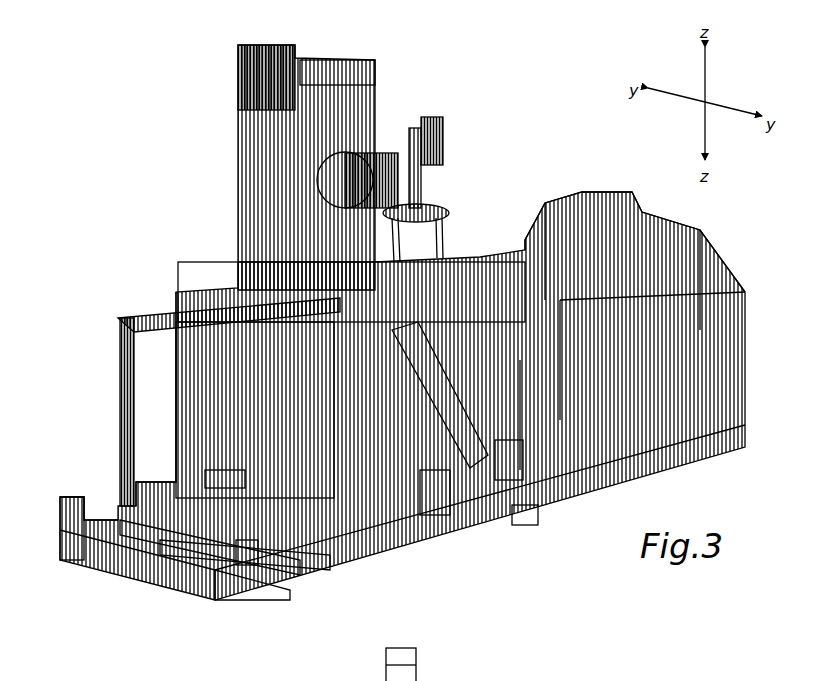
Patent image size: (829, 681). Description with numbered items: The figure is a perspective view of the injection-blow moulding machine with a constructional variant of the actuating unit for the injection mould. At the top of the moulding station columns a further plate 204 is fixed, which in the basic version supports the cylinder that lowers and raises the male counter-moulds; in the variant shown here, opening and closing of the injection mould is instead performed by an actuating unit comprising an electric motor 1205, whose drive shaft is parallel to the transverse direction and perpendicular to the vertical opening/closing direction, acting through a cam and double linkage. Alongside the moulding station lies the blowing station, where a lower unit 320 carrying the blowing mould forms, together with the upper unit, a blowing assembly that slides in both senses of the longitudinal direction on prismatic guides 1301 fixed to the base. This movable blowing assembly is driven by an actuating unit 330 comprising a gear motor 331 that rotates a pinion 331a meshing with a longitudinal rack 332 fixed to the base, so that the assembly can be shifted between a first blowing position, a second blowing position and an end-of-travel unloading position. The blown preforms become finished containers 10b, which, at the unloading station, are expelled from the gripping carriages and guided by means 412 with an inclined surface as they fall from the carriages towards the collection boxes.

The further plate 204 is at (308, 48).
The electric motor 1205 is at (374, 163).
The lower unit 320 is at (178, 290).
The actuating unit 330 is at (158, 462).
The prismatic guides 1301 is at (70, 567).
The longitudinal rack 332 is at (168, 553).
The pinion 331a is at (211, 580).
The gear motor 331 is at (263, 577).
The containers 10b is at (471, 510).
The means with an inclined surface 412 is at (523, 513).